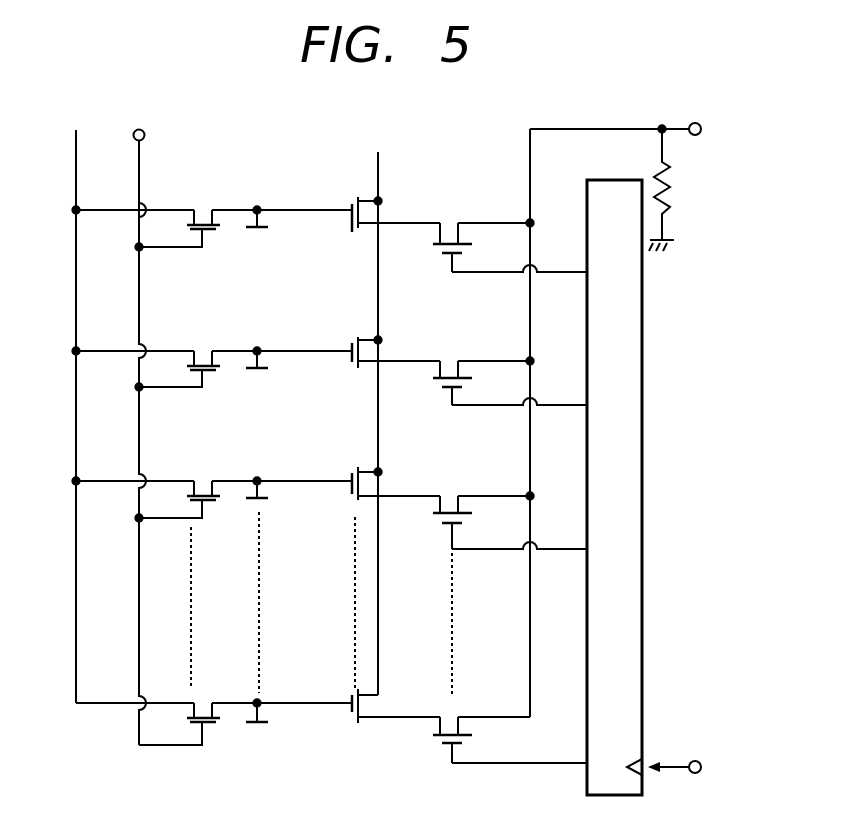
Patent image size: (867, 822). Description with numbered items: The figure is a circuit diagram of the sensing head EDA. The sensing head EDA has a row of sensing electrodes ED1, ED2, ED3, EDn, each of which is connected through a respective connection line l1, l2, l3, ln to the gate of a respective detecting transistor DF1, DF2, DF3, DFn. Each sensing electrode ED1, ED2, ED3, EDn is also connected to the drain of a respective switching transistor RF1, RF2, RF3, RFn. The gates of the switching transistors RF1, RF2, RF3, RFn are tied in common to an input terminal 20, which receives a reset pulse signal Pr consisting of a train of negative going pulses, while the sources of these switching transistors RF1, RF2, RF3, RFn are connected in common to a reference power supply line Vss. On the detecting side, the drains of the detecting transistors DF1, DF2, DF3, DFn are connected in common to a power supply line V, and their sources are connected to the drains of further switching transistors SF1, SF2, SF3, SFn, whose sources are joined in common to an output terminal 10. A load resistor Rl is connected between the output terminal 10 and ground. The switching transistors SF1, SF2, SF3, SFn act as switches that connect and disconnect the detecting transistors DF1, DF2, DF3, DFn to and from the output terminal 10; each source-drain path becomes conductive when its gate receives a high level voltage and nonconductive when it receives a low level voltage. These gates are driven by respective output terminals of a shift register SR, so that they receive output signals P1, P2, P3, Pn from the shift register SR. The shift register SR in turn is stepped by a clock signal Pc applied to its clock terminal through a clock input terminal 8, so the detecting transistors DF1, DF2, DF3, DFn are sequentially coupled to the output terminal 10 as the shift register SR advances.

The input terminal 20 is at (139, 129).
The output terminal 10 is at (694, 123).
The clock input terminal 8 is at (695, 757).
The reference power supply line Vss is at (77, 402).
The power supply line V is at (376, 413).
The reset pulse signal Pr is at (154, 209).
The clock signal Pc is at (665, 760).
The sensing head EDA is at (488, 159).
The shift register SR is at (644, 321).
The load resistor Rl is at (678, 198).
The switching transistor RF1 is at (204, 208).
The switching transistor RF2 is at (205, 350).
The switching transistor RF3 is at (203, 480).
The switching transistor RFn is at (204, 701).
The detecting transistor DF1 is at (365, 257).
The detecting transistor DF2 is at (348, 340).
The detecting transistor DF3 is at (350, 472).
The detecting transistor DFn is at (351, 693).
The switching transistor SF1 is at (450, 228).
The switching transistor SF2 is at (452, 364).
The switching transistor SF3 is at (452, 499).
The switching transistor SFn is at (456, 712).
The sensing electrode ED1 is at (251, 225).
The sensing electrode ED2 is at (251, 362).
The sensing electrode ED3 is at (251, 492).
The sensing electrode EDn is at (251, 716).
The connection line l1 is at (285, 213).
The connection line l2 is at (288, 354).
The connection line l3 is at (288, 484).
The connection line ln is at (288, 706).
The output signal P1 is at (552, 264).
The output signal P2 is at (553, 398).
The output signal P3 is at (553, 540).
The output signal Pn is at (546, 759).